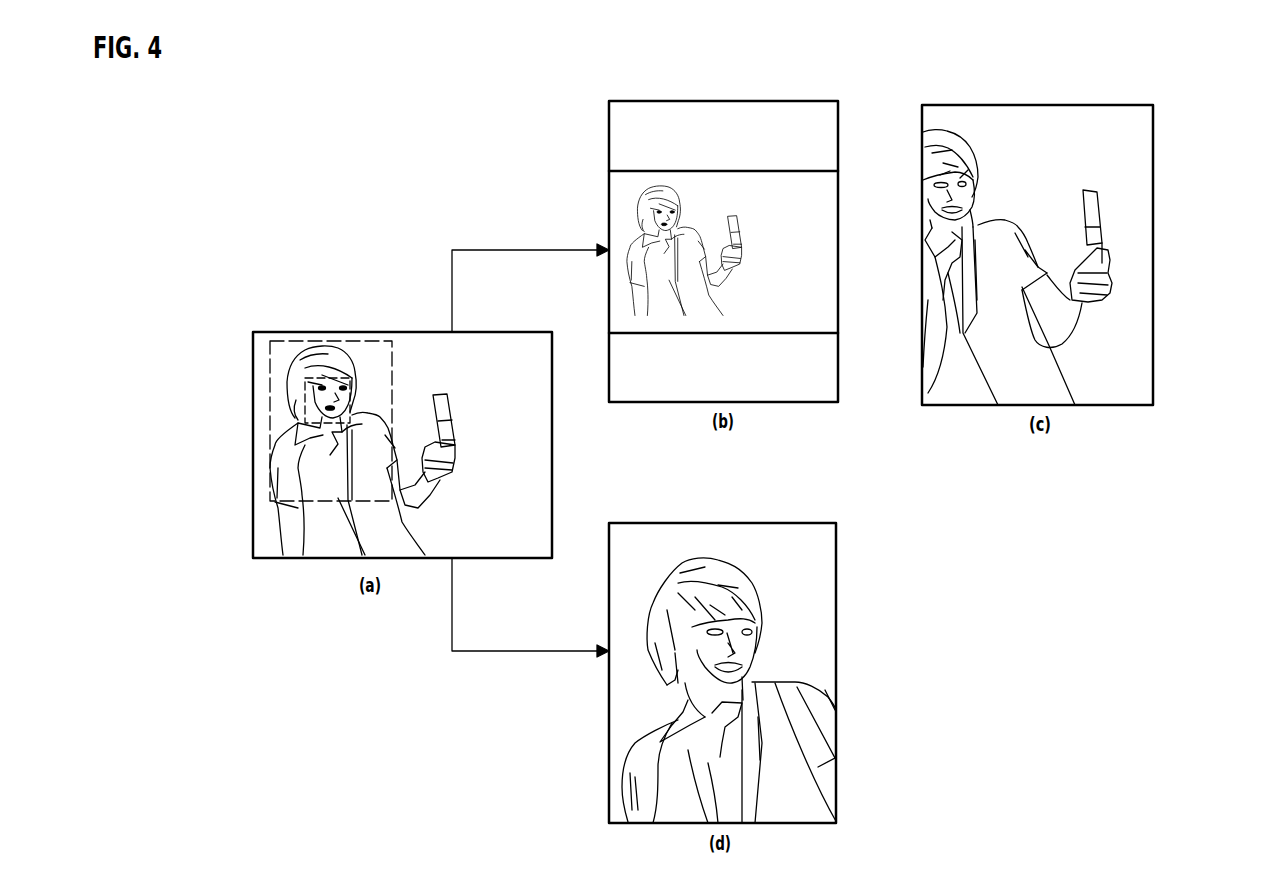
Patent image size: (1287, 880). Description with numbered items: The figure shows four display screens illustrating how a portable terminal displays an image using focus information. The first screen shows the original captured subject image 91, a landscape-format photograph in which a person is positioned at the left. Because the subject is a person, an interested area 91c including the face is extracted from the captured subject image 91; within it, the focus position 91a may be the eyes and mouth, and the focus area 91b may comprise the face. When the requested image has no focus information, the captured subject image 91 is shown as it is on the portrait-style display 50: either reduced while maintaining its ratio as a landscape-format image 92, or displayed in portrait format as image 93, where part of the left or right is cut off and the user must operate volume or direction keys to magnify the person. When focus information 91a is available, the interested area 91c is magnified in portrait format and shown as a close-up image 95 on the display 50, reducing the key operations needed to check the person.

The display 50 is at (805, 101).
The captured subject image 91 is at (253, 452).
The focus position 91a is at (350, 423).
The focus area 91b is at (305, 394).
The interested area 91c is at (270, 350).
The image displayed on the display 92 is at (750, 171).
The image displayed in portrait format 93 is at (1118, 130).
The captured subject image displayed in close-up 95 is at (800, 548).